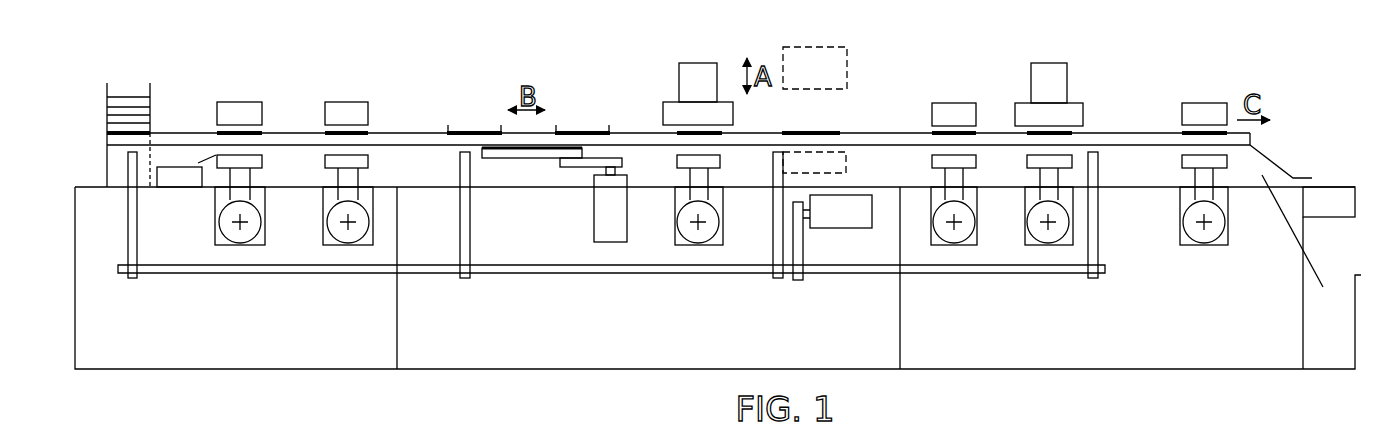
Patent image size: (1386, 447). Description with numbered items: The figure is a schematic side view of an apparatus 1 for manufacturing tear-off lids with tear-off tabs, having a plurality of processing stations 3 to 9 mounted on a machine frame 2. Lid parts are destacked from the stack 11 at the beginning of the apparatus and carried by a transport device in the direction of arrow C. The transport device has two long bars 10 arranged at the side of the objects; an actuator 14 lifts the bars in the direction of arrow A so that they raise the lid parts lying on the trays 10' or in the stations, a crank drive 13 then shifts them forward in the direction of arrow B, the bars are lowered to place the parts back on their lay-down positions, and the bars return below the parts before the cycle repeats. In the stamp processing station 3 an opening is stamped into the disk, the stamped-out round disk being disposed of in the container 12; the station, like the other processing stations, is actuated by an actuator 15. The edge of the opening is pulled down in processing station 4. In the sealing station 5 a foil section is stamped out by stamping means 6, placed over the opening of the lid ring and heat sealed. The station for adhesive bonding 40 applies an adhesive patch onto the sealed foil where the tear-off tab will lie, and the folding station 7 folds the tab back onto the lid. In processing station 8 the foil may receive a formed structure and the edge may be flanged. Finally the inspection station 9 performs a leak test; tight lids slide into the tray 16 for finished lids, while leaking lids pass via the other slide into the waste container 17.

The apparatus 1 is at (488, 380).
The machine frame 2 is at (353, 350).
The stamp processing station 3 is at (232, 112).
The processing station 4 is at (340, 108).
The sealing station 5 is at (673, 112).
The stamping means 6 is at (693, 66).
The folding station 7 is at (946, 110).
The processing station 8 is at (1025, 108).
The inspection station 9 is at (1192, 112).
The bars 10 is at (678, 119).
The trays 10' is at (667, 102).
The stack 11 is at (130, 96).
The container 12 is at (178, 172).
The crank drive 13 is at (606, 224).
The actuator 14 is at (852, 203).
The actuator 15 is at (226, 226).
The tray 16 is at (1325, 190).
The waste container 17 is at (1327, 357).
The station for adhesive bonding 40 is at (819, 37).